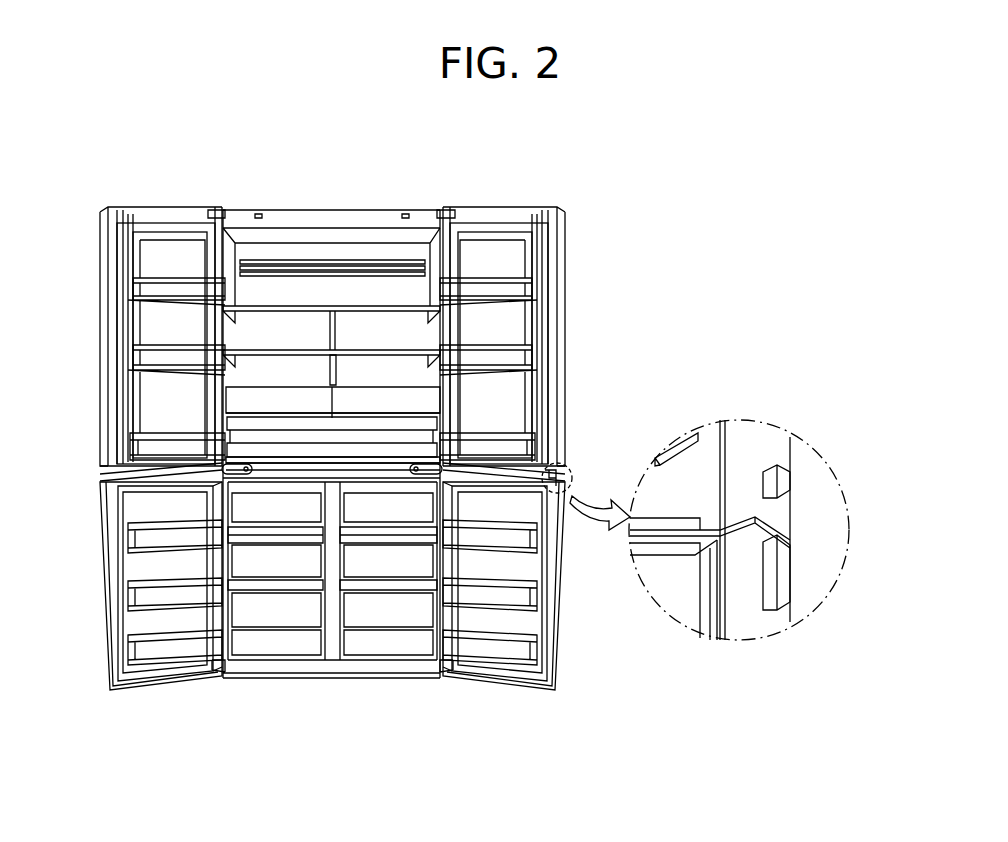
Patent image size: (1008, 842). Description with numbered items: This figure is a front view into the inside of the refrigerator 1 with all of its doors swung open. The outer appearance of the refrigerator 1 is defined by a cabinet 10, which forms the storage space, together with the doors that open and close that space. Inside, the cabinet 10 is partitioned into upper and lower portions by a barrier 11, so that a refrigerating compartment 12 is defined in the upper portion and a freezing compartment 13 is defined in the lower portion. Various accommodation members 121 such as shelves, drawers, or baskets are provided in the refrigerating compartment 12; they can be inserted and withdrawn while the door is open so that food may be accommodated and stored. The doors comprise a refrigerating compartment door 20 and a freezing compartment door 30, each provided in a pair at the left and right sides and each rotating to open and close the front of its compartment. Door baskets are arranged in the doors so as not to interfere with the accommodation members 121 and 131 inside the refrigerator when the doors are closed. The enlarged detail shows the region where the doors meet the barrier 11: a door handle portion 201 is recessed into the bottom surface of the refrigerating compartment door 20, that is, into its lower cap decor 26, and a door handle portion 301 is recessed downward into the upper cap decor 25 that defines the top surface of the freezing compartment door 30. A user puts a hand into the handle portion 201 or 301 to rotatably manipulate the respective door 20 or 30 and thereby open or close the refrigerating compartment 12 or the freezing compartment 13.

The refrigerator 1 is at (122, 168).
The cabinet 10 is at (417, 209).
The barrier 11 is at (393, 468).
The refrigerating compartment 12 is at (376, 329).
The freezing compartment 13 is at (376, 567).
The refrigerating compartment door 20 is at (132, 210).
The accommodation member 121 is at (257, 342).
The freezing compartment door 30 is at (447, 678).
The accommodation member 131 is at (353, 613).
The door handle portion 201 is at (790, 484).
The lower cap decor 26 is at (752, 505).
The door handle portion 301 is at (770, 573).
The upper cap decor 25 is at (743, 545).